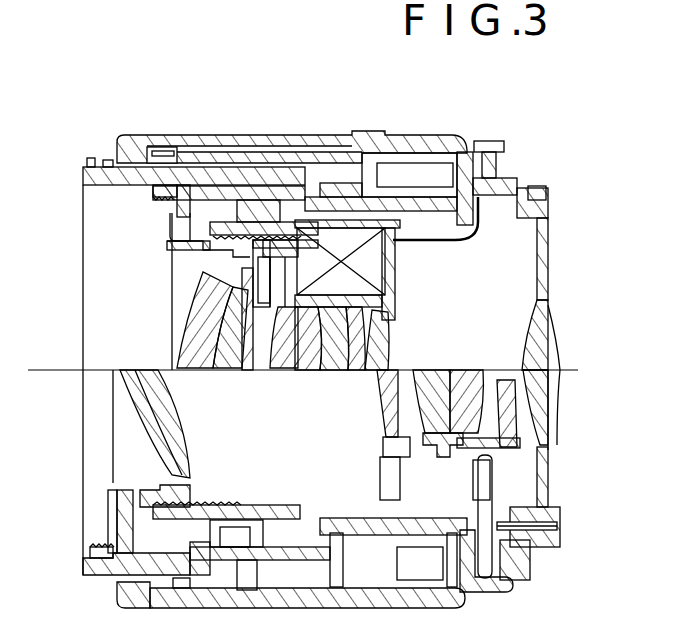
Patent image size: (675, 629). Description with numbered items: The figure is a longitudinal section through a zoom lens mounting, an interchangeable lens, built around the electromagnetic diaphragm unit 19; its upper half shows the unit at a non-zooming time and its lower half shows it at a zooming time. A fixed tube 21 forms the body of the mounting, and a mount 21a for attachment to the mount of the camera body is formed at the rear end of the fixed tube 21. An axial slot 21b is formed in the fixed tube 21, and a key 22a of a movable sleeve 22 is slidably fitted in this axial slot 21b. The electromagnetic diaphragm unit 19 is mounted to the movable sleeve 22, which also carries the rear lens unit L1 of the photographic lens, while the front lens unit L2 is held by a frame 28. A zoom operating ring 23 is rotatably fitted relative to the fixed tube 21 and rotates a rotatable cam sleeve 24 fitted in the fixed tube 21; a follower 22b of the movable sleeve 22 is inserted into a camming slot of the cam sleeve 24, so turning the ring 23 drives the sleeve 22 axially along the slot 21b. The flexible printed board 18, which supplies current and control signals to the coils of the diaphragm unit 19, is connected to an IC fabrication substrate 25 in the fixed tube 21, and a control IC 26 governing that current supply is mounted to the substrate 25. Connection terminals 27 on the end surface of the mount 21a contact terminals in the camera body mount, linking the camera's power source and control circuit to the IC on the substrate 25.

The flexible printed board 18 is at (473, 240).
The electromagnetic diaphragm unit 19 is at (372, 270).
The fixed tube 21 is at (470, 140).
The mount 21a is at (513, 183).
The axial slot 21b is at (410, 213).
The movable sleeve 22 is at (388, 253).
The key 22a is at (312, 195).
The follower 22b is at (262, 200).
The zoom operating ring 23 is at (362, 160).
The rotatable cam sleeve 24 is at (352, 200).
The IC fabrication substrate 25 is at (507, 585).
The control IC 26 is at (483, 553).
The connection terminals 27 is at (560, 527).
The frame 28 is at (203, 253).
The rear lens unit L1 is at (245, 376).
The front lens unit L2 is at (227, 337).